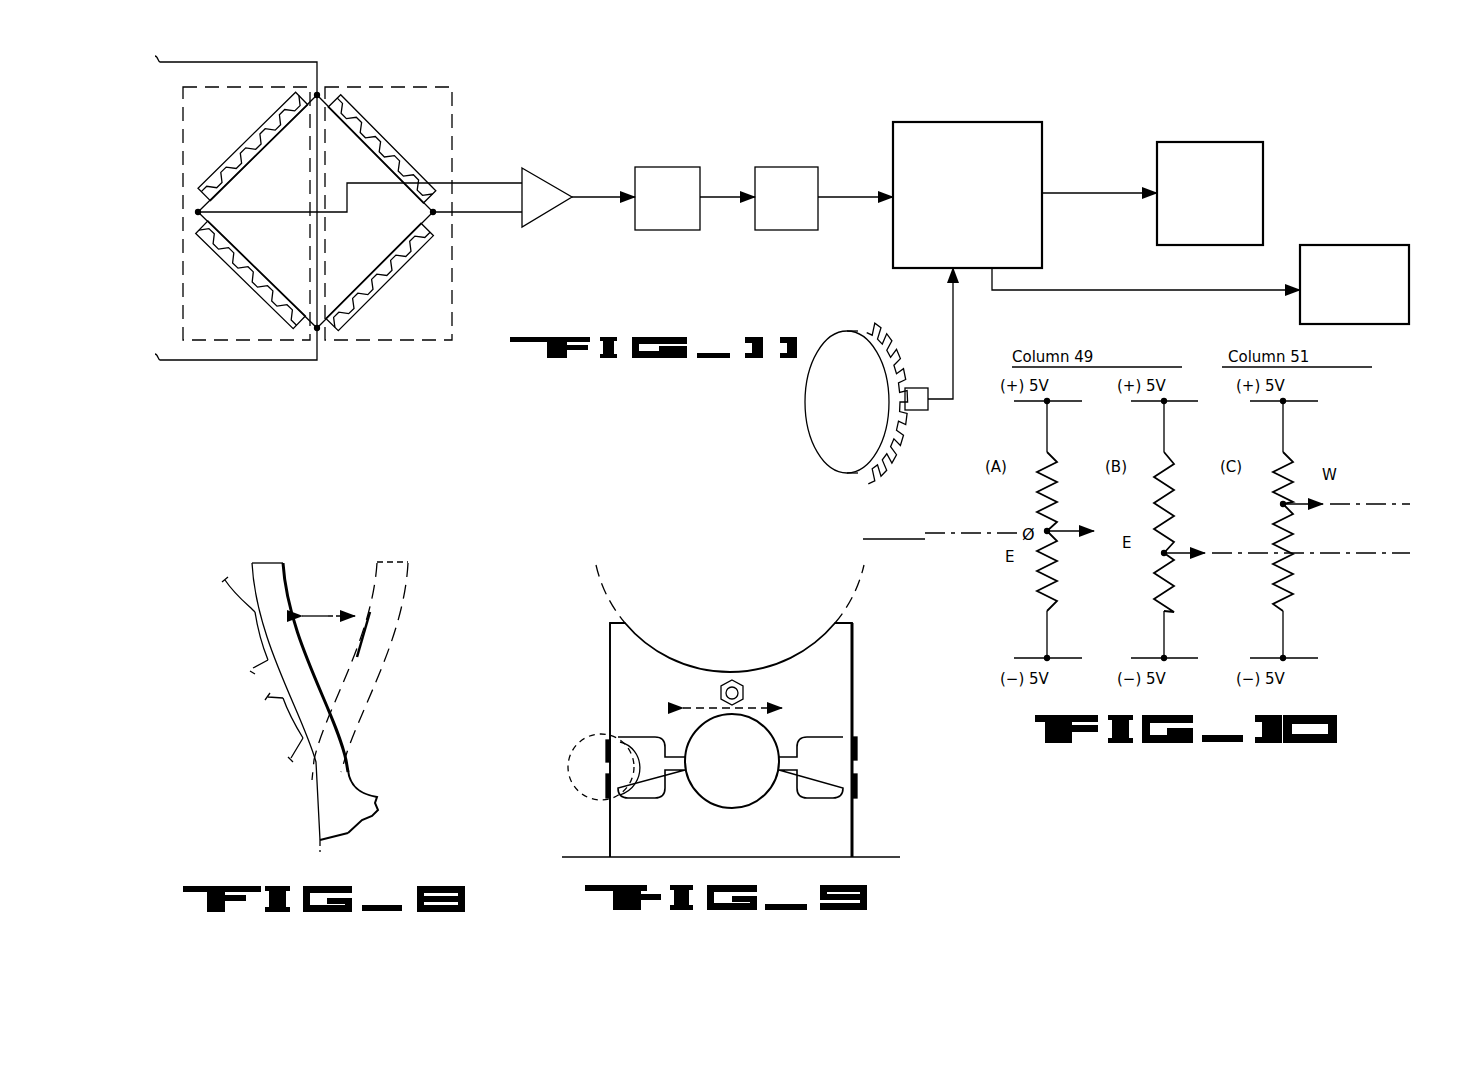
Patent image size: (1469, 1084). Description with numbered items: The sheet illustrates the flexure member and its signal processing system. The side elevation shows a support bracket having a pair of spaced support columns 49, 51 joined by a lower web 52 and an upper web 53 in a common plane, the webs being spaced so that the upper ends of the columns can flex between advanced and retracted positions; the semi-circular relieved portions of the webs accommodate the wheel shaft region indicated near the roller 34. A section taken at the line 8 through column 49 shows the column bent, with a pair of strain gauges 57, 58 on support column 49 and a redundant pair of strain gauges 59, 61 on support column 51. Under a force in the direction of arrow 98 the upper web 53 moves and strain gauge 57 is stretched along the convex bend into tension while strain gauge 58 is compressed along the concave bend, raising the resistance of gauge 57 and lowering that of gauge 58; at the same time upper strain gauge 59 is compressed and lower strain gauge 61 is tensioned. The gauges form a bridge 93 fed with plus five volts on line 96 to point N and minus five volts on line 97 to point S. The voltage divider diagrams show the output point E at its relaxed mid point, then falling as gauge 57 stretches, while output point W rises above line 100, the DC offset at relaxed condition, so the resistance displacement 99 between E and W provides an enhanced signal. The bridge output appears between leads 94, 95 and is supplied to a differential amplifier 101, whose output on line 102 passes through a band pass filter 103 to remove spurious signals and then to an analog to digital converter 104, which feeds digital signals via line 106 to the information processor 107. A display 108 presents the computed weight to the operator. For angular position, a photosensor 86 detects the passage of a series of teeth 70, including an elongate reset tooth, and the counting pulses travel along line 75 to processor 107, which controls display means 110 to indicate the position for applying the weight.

In FIG. 9, the section line 8— 8 is at (615, 752).
In FIG. 9, the roller 34 is at (622, 608).
In FIG. 11, the support column 49 is at (452, 112).
In FIG. 8, the support column 49 is at (382, 650).
In FIG. 9, the support column 49 is at (616, 735).
In FIG. 11, the support column 51 is at (183, 178).
In FIG. 9, the support column 51 is at (855, 767).
In FIG. 8, the web 52 is at (345, 825).
In FIG. 9, the web 52 is at (731, 740).
In FIG. 9, the web 53 is at (730, 739).
In FIG. 11, the strain gauge 57 is at (385, 160).
In FIG. 10, the strain gauge 57 is at (1052, 456).
In FIG. 8, the strain gauge 57 is at (258, 628).
In FIG. 9, the strain gauge 57 is at (607, 750).
In FIG. 11, the strain gauge 58 is at (363, 275).
In FIG. 10, the strain gauge 58 is at (1040, 578).
In FIG. 8, the strain gauge 58 is at (292, 712).
In FIG. 9, the strain gauge 58 is at (607, 785).
In FIG. 11, the strain gauge 59 is at (245, 157).
In FIG. 10, the strain gauge 59 is at (1290, 456).
In FIG. 9, the strain gauge 59 is at (857, 750).
In FIG. 11, the strain gauge 61 is at (235, 262).
In FIG. 10, the strain gauge 61 is at (1290, 585).
In FIG. 9, the strain gauge 61 is at (857, 787).
In FIG. 11, the teeth 70 is at (883, 335).
In FIG. 11, the line 75 is at (955, 345).
In FIG. 11, the photosensor 86 is at (918, 388).
In FIG. 11, the bridge 93 is at (377, 72).
In FIG. 11, the lead 94 is at (508, 168).
In FIG. 10, the lead 94 is at (1310, 492).
In FIG. 11, the lead 95 is at (510, 232).
In FIG. 10, the lead 95 is at (1062, 528).
In FIG. 11, the line 96 is at (270, 62).
In FIG. 11, the line 97 is at (292, 360).
In FIG. 8, the arrow 98 is at (325, 614).
In FIG. 9, the arrow 98 is at (712, 690).
In FIG. 10, the resistance displacement 99 is at (1397, 553).
In FIG. 10, the line 100 is at (948, 540).
In FIG. 11, the differential amplifier 101 is at (548, 172).
In FIG. 11, the line 102 is at (588, 195).
In FIG. 11, the band pass filter 103 is at (670, 167).
In FIG. 11, the analog to digital converter 104 is at (778, 172).
In FIG. 11, the line 106 is at (838, 193).
In FIG. 11, the information processor 107 is at (1096, 206).
In FIG. 11, the display 108 is at (1195, 150).
In FIG. 11, the display means 110 is at (1380, 245).